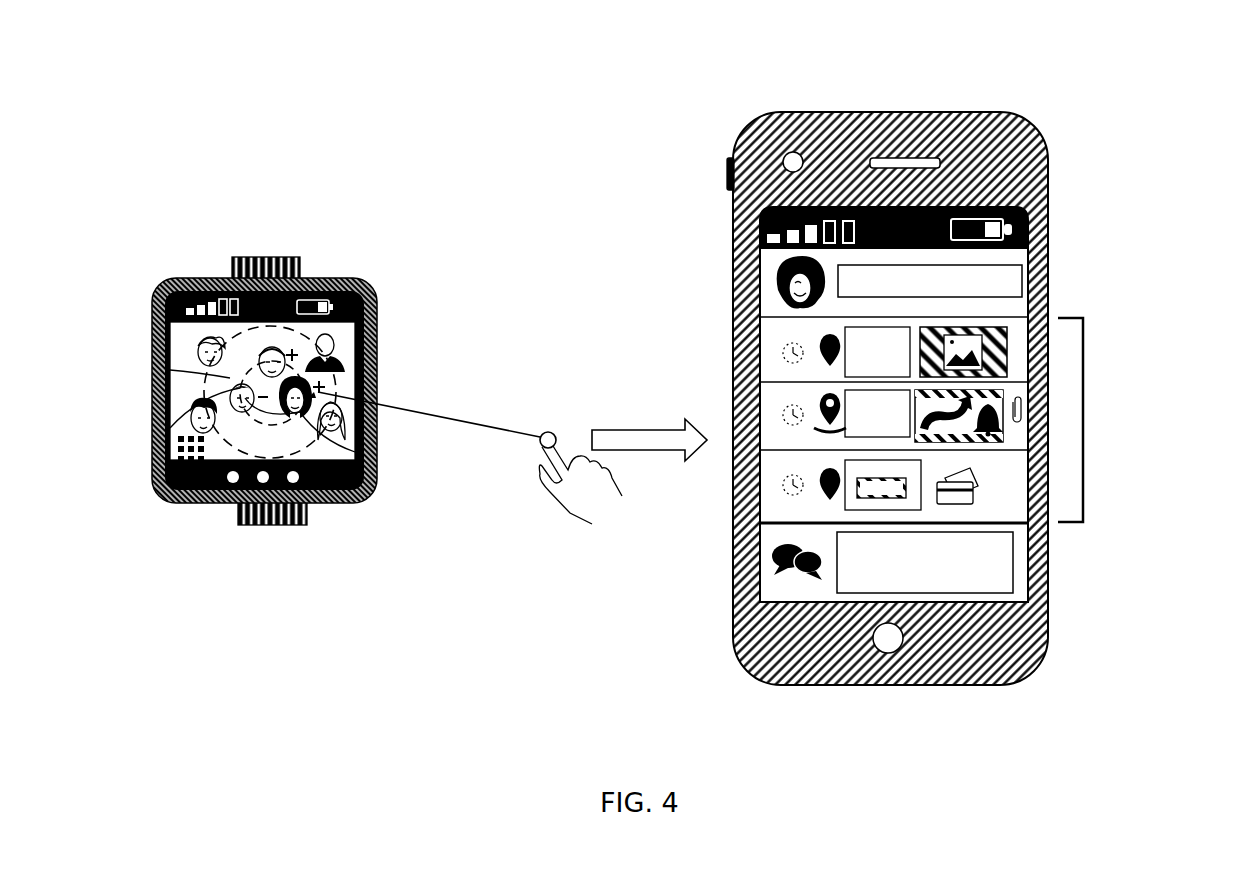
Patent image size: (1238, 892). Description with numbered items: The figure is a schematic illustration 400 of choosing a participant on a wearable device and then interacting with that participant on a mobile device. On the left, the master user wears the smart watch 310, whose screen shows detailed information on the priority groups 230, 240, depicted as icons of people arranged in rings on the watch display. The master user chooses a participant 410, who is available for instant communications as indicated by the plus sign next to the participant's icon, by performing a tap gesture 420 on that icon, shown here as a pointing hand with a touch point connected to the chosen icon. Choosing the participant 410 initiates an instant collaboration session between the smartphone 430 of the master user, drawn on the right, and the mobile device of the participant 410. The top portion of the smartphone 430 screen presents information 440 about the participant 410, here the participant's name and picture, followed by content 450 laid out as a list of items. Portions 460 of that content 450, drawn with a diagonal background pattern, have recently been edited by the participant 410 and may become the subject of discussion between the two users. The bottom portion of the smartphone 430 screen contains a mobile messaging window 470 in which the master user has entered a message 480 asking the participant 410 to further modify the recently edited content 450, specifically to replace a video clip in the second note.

The smart watch 310 is at (199, 278).
The priority group 230 is at (170, 370).
The priority group 240 is at (170, 428).
The participant 410 is at (377, 453).
The tap gesture 420 is at (549, 431).
The schematic illustration 400 is at (1140, 131).
The smartphone 430 is at (727, 150).
The information about the participant 440 is at (1013, 282).
The content 450 is at (1087, 362).
The portions of content 460 is at (960, 425).
The mobile messaging window 470 is at (765, 556).
The message 480 is at (972, 578).